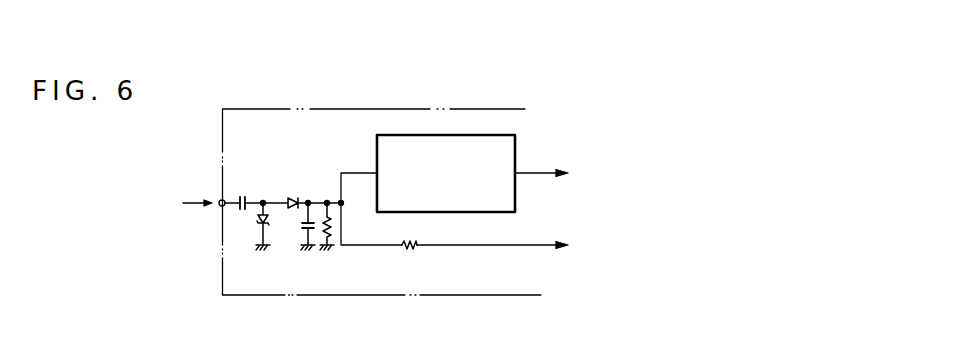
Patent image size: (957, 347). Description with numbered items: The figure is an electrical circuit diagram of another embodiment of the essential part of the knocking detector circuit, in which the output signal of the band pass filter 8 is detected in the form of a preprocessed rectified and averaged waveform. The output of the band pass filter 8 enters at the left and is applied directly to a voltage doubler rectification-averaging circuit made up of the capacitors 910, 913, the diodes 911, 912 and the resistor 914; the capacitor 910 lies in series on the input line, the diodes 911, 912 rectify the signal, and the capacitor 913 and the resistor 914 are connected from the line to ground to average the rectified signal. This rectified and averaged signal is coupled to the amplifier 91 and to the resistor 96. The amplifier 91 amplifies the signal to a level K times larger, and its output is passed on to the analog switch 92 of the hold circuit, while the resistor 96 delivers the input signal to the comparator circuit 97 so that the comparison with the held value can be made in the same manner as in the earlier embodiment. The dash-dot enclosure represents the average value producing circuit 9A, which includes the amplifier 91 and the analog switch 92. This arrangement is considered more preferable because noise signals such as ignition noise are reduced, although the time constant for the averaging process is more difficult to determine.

The band pass filter 8 is at (191, 201).
The average value producing circuit 9A is at (467, 109).
The amplifier 91 is at (377, 148).
The analog switch 92 is at (559, 177).
The resistor 96 is at (415, 239).
The comparator circuit 97 is at (578, 249).
The capacitor 910 is at (248, 189).
The diode 911 is at (259, 220).
The diode 912 is at (295, 198).
The capacitor 913 is at (302, 226).
The resistor 914 is at (333, 228).